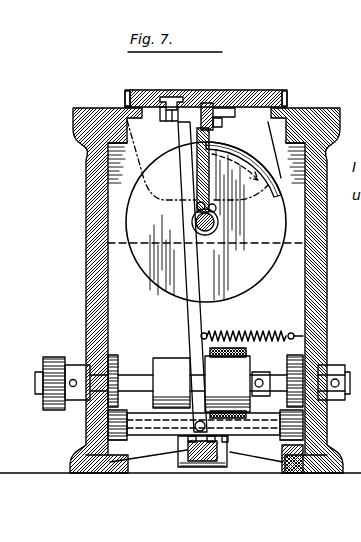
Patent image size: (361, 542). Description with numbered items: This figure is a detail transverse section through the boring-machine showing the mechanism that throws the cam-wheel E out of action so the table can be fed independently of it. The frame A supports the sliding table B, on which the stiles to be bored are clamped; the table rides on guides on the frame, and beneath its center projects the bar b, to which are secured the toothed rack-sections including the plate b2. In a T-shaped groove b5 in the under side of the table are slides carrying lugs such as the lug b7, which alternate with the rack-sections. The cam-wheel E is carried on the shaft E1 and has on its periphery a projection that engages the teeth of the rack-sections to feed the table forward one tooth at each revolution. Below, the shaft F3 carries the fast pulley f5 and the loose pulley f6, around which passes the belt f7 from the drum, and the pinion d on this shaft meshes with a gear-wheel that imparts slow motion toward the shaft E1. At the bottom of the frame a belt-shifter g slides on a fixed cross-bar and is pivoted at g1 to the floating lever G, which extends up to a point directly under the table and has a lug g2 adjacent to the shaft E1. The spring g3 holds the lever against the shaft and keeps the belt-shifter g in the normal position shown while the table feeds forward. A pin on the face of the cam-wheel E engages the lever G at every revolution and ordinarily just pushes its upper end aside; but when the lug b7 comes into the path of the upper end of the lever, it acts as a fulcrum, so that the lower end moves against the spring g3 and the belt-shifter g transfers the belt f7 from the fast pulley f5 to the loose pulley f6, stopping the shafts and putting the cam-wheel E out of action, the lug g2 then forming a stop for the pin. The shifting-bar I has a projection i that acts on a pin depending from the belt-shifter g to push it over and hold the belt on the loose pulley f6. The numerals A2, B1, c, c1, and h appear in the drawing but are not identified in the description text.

The frame A is at (93, 310).
The frame base bracket A2 is at (266, 452).
The sliding table B is at (276, 90).
The top plate end flanges B1 is at (299, 97).
The bar b is at (216, 117).
The toothed plate b2 is at (214, 126).
The T-shaped groove b5 is at (171, 97).
The lug b7 is at (168, 121).
The arc segment c is at (278, 180).
The hidden bracket outline c1 is at (214, 207).
The pinion d is at (62, 357).
The cam-wheel E is at (254, 278).
The shaft E1 is at (218, 224).
The shaft F3 is at (136, 385).
The fast pulley f5 is at (227, 384).
The loose pulley f6 is at (171, 383).
The belt f7 is at (244, 352).
The floating lever G is at (187, 306).
The belt-shifter g is at (303, 414).
The pivot g1 is at (195, 430).
The lug g2 is at (198, 206).
The spring g3 is at (252, 324).
The clamp h is at (226, 442).
The projection i is at (180, 455).
The shifting-bar I is at (201, 467).